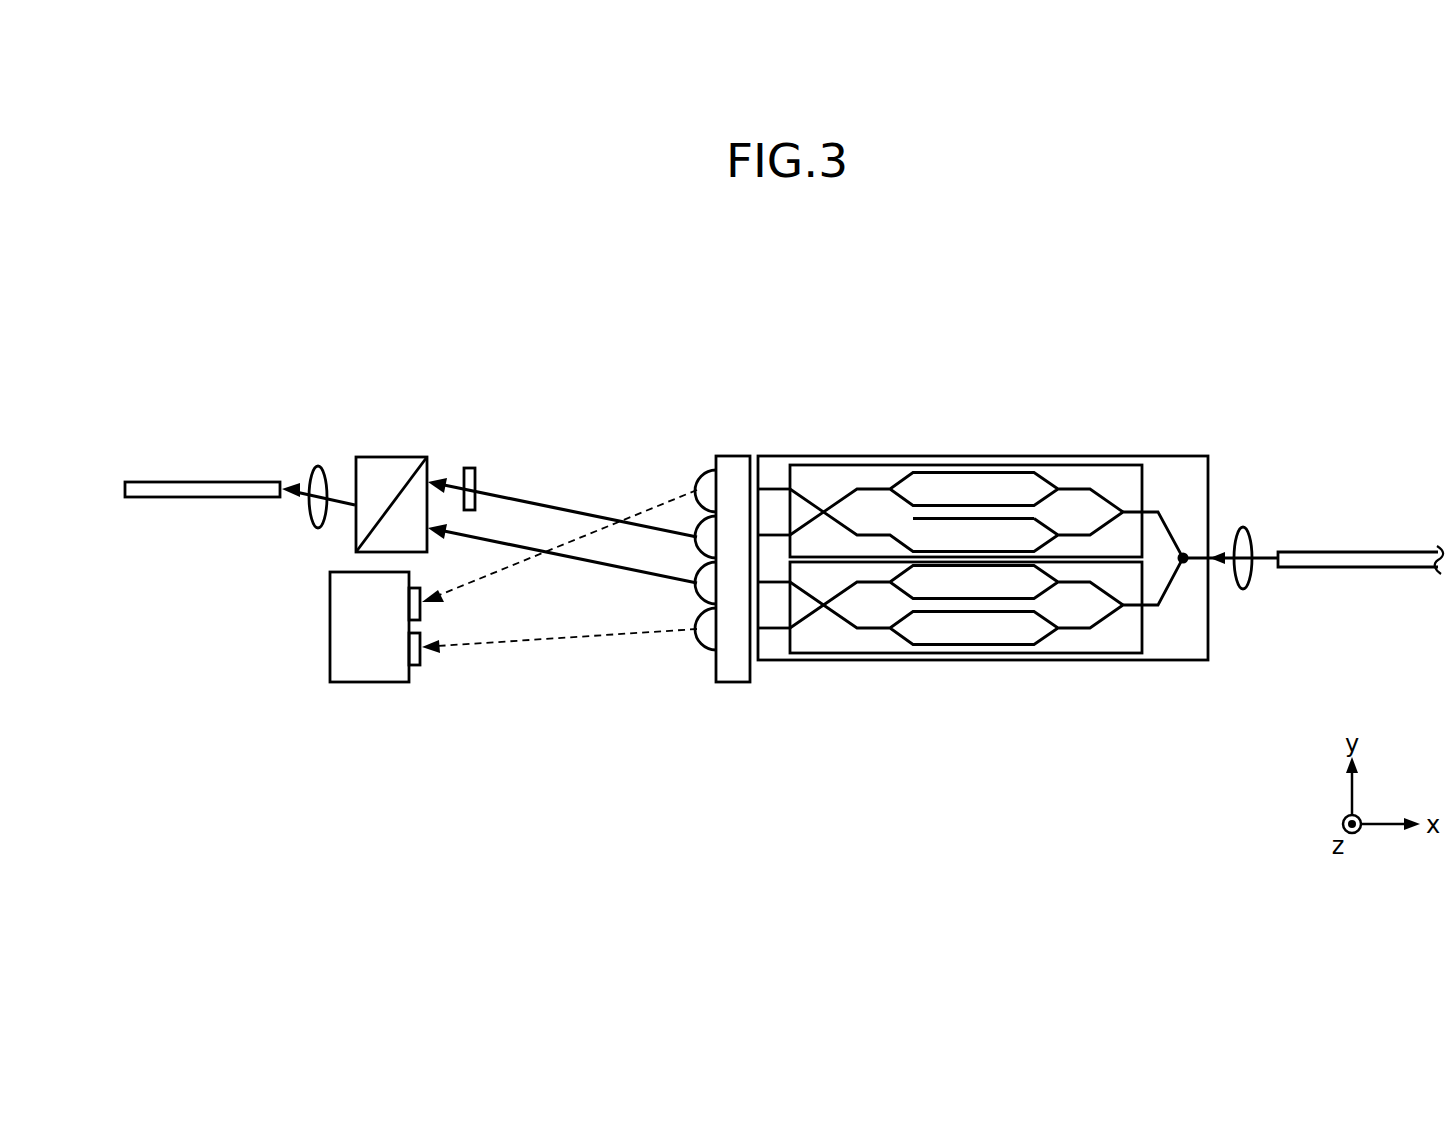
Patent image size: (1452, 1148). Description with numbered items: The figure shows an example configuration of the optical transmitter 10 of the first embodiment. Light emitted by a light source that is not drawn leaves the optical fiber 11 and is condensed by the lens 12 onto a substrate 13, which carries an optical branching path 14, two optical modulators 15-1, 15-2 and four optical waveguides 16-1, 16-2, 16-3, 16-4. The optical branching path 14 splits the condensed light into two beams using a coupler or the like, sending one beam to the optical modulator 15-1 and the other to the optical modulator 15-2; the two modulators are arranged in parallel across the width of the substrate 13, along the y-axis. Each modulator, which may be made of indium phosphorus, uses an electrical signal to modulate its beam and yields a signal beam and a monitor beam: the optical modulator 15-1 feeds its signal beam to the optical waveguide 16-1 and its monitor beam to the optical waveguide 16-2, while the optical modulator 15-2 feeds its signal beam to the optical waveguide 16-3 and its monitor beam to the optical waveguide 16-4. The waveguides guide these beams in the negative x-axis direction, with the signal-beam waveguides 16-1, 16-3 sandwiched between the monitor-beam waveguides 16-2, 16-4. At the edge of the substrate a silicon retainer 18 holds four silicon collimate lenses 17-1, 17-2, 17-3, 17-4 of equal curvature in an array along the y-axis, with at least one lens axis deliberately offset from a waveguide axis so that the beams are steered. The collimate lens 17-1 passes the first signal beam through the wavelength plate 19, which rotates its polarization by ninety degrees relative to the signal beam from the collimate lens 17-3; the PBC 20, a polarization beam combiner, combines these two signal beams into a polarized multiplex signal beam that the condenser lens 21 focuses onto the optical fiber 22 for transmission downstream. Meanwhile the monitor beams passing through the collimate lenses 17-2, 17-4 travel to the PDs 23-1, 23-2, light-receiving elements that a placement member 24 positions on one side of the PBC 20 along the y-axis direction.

The optical transmitter 10 is at (1188, 301).
The optical fiber 11 is at (1370, 552).
The lens 12 is at (1243, 527).
The substrate 13 is at (1178, 456).
The optical branching path 14 is at (1185, 566).
The optical modulator 15-1 is at (1146, 485).
The optical modulator 15-2 is at (1146, 640).
The optical waveguide 16-1 is at (772, 535).
The optical waveguide 16-2 is at (772, 489).
The optical waveguide 16-3 is at (772, 585).
The optical waveguide 16-4 is at (771, 630).
The collimate lens 17-1 is at (697, 496).
The collimate lens 17-2 is at (706, 520).
The collimate lens 17-3 is at (706, 600).
The collimate lens 17-4 is at (709, 642).
The retainer 18 is at (738, 456).
The wavelength plate 19 is at (469, 468).
The PBC 20 is at (388, 457).
The condenser lens 21 is at (318, 466).
The optical fiber 22 is at (166, 480).
The PD 23-1 is at (420, 618).
The PD 23-2 is at (420, 660).
The placement member 24 is at (330, 622).